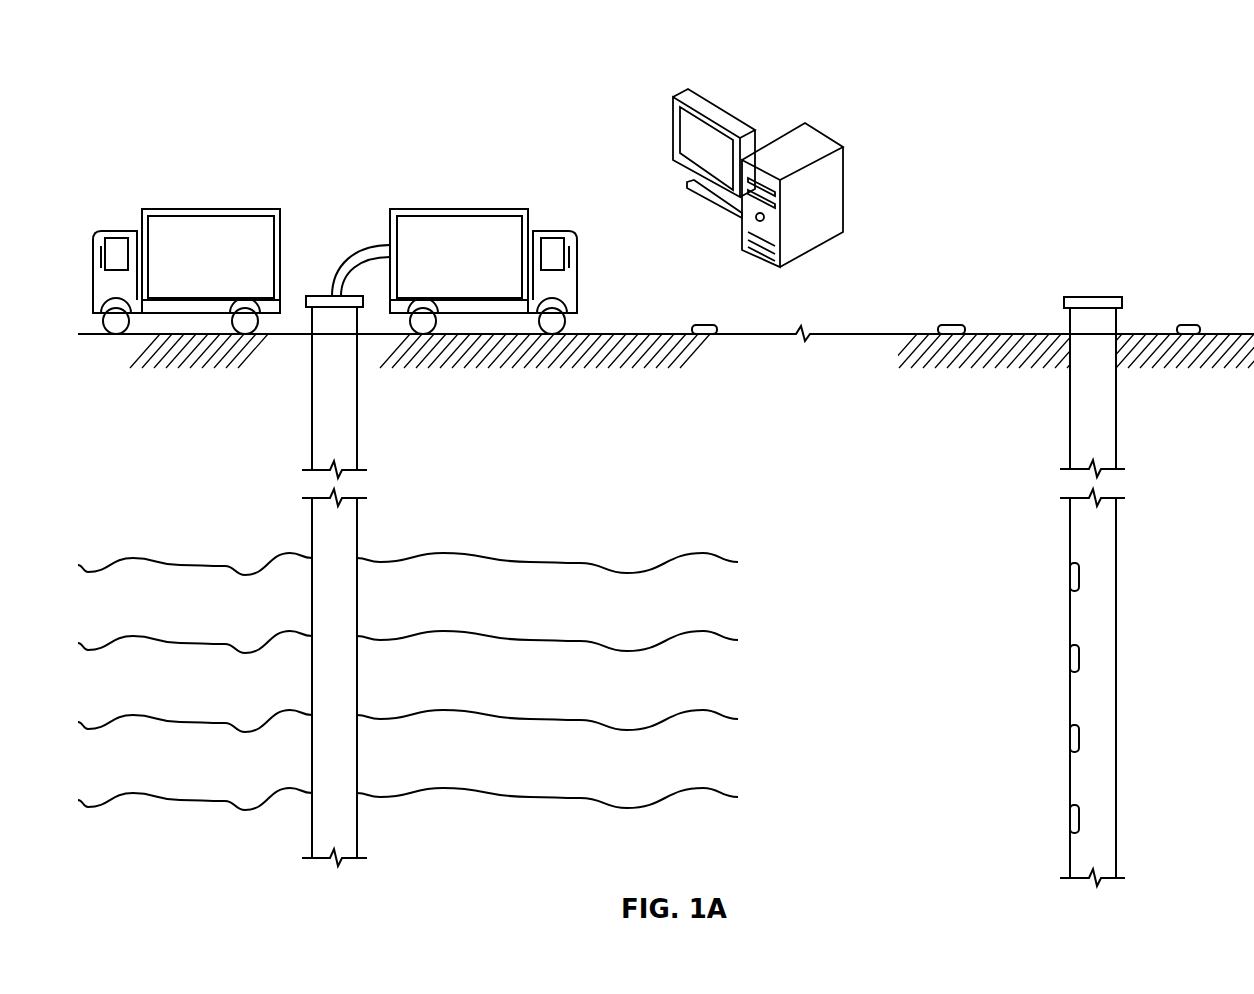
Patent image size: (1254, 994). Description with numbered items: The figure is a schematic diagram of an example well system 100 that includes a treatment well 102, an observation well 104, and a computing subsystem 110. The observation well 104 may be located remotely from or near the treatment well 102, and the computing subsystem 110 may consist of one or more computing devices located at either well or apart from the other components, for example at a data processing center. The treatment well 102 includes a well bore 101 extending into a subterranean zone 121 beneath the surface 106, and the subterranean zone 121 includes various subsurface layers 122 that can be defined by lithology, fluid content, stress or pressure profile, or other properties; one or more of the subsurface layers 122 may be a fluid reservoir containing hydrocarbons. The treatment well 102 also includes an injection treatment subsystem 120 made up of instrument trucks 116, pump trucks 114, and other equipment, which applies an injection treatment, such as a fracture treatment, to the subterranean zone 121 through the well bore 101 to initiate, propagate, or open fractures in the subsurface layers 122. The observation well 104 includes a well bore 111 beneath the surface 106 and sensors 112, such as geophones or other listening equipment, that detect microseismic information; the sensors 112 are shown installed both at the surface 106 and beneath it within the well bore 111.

The well system 100 is at (163, 80).
The well bore 101 is at (328, 430).
The treatment well 102 is at (276, 134).
The observation well 104 is at (1099, 173).
The surface 106 is at (861, 333).
The computing subsystem 110 is at (822, 133).
The well bore 111 is at (1093, 432).
The sensors 112 is at (705, 324).
The pump trucks 114 is at (483, 268).
The instrument trucks 116 is at (227, 268).
The injection treatment subsystem 120 is at (355, 151).
The subterranean zone 121 is at (752, 503).
The subsurface layers 122 is at (550, 610).